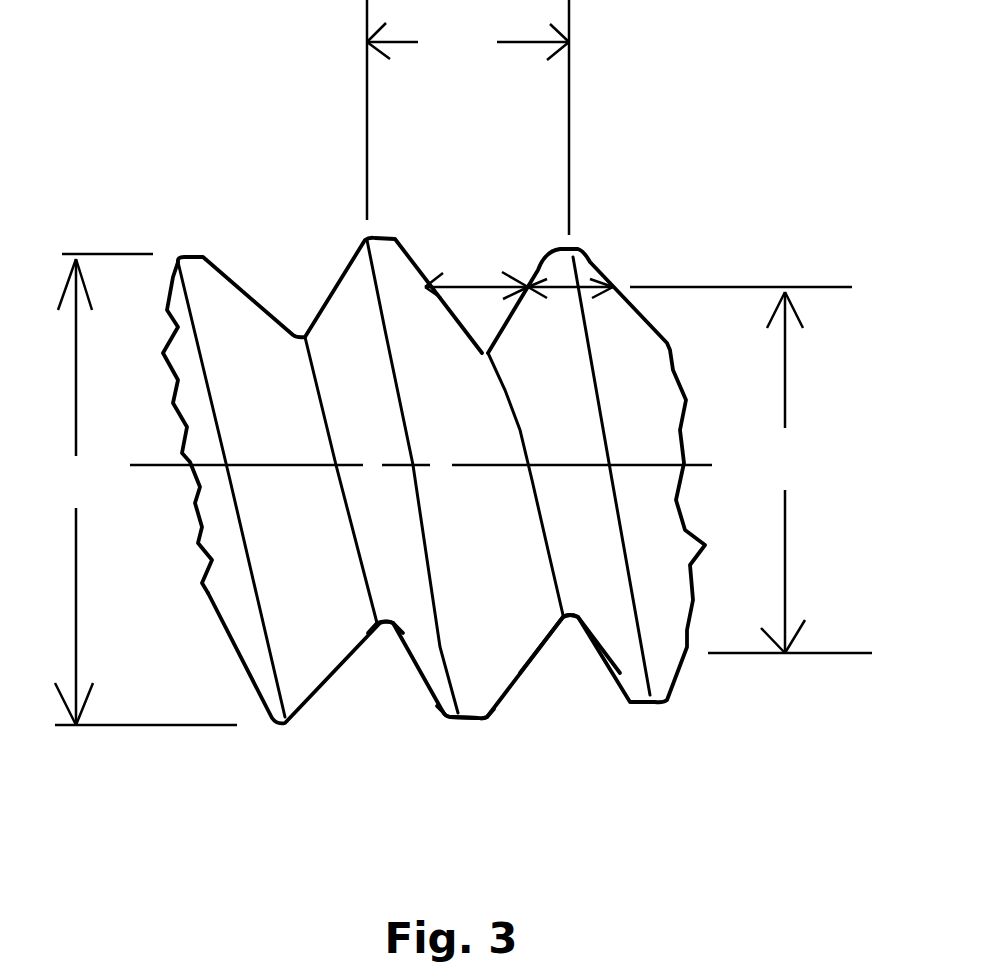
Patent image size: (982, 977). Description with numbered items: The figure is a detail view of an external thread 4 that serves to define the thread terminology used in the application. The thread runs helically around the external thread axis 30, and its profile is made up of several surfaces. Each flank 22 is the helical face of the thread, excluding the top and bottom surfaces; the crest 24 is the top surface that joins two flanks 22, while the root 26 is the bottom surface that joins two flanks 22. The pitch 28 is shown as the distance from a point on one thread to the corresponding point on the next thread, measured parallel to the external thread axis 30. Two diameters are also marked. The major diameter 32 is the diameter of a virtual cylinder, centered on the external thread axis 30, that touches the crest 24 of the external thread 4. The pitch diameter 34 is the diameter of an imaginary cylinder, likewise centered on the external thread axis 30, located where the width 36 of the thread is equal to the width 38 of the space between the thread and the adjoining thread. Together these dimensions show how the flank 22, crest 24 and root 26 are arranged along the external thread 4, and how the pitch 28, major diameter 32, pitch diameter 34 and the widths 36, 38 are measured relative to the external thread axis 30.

The external thread 4 is at (207, 593).
The flank 22 is at (520, 673).
The crest 24 is at (466, 710).
The root 26 is at (377, 626).
The pitch 28 is at (468, 117).
The external thread axis 30 is at (267, 457).
The major diameter 32 is at (144, 489).
The pitch diameter 34 is at (751, 470).
The width of the thread 36 is at (563, 287).
The width of the space between the thread and an adjoining thread 38 is at (477, 288).